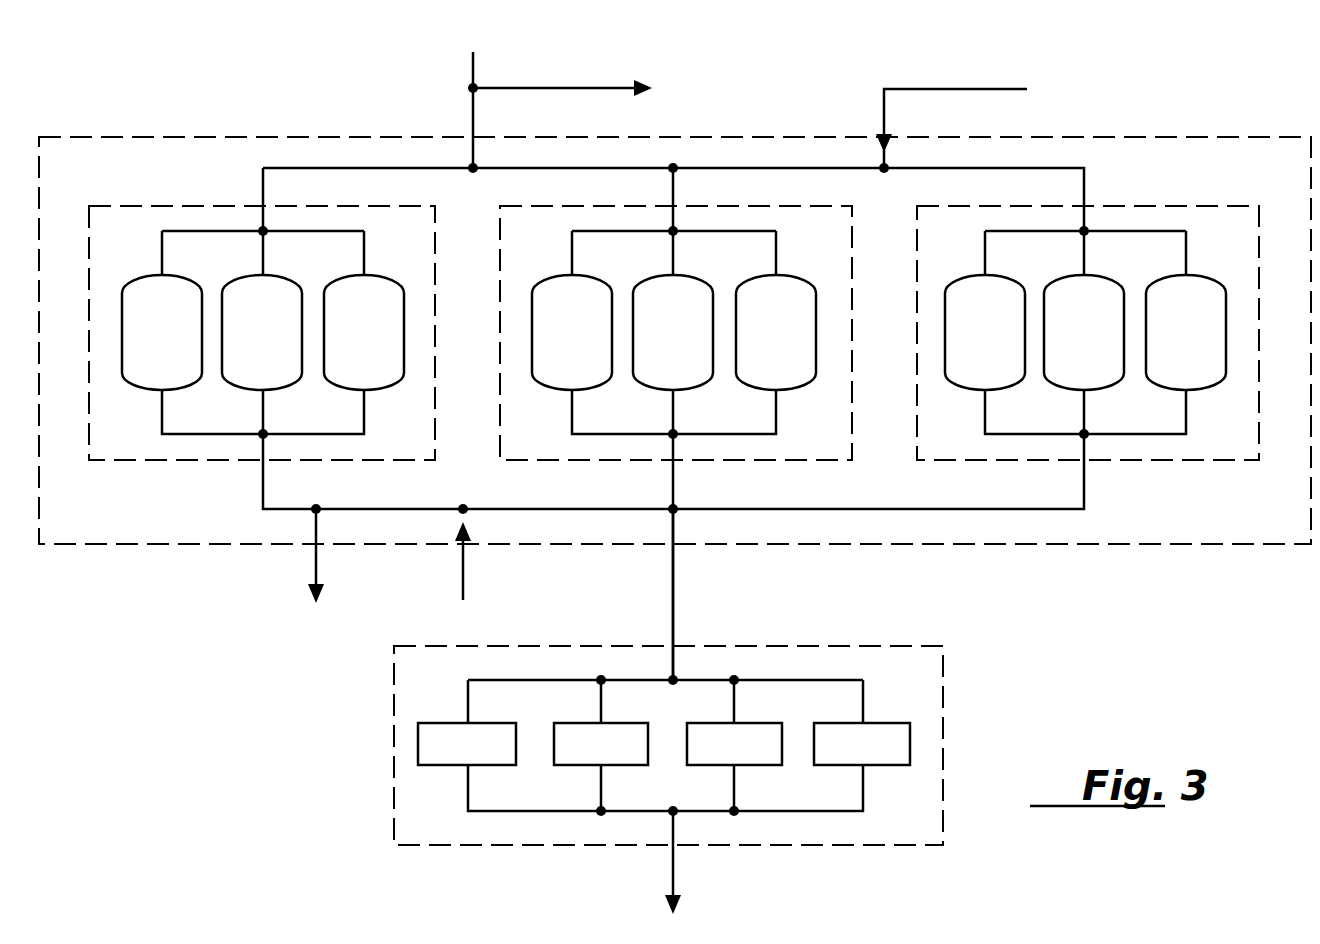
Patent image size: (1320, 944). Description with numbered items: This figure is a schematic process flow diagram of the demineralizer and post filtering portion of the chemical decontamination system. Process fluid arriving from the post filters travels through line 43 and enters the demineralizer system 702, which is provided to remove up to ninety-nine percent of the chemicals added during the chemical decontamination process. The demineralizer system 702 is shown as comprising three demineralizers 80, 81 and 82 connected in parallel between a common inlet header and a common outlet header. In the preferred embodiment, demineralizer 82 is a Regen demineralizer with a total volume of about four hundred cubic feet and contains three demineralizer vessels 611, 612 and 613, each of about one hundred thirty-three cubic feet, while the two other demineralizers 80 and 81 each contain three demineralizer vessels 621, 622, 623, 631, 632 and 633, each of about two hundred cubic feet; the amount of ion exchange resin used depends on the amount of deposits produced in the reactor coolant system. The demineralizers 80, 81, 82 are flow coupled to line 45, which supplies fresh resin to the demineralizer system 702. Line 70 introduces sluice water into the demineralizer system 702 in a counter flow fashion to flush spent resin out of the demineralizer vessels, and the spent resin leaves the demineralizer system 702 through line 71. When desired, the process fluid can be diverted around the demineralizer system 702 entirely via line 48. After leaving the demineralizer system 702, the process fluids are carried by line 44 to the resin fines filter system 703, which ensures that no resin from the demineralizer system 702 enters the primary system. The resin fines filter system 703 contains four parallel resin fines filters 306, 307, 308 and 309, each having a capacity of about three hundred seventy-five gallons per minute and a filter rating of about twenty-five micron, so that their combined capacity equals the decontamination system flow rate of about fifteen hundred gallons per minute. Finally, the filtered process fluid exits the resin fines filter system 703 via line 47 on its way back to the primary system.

The demineralizer system 702 is at (212, 137).
The demineralizer 80 is at (152, 205).
The demineralizer 81 is at (499, 260).
The Regen demineralizer 82 is at (917, 255).
The demineralizer vessel 611 is at (143, 349).
The demineralizer vessel 612 is at (243, 349).
The demineralizer vessel 613 is at (345, 349).
The demineralizer vessel 621 is at (757, 349).
The demineralizer vessel 622 is at (654, 349).
The demineralizer vessel 623 is at (553, 349).
The demineralizer vessel 631 is at (966, 349).
The demineralizer vessel 632 is at (1065, 349).
The demineralizer vessel 633 is at (1167, 349).
The line 43 is at (470, 72).
The line 48 is at (590, 90).
The line 45 is at (958, 88).
The line 71 is at (314, 562).
The line 70 is at (462, 575).
The line 44 is at (673, 608).
The resin fines filter system 703 is at (943, 700).
The resin fines filter 306 is at (503, 755).
The resin fines filter 307 is at (633, 755).
The resin fines filter 308 is at (760, 755).
The resin fines filter 309 is at (892, 755).
The line 47 is at (675, 877).